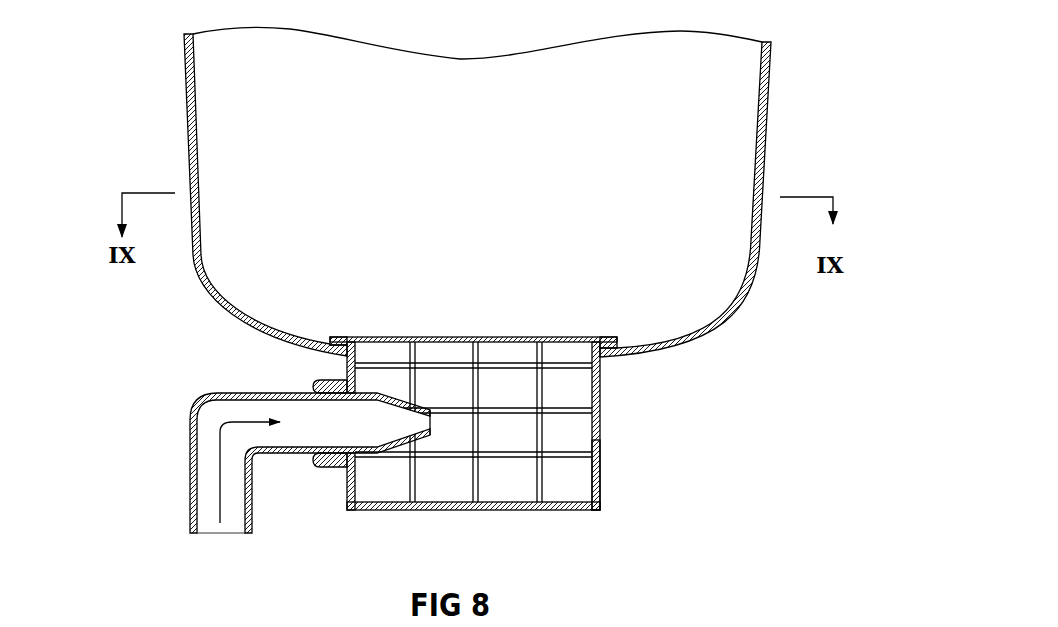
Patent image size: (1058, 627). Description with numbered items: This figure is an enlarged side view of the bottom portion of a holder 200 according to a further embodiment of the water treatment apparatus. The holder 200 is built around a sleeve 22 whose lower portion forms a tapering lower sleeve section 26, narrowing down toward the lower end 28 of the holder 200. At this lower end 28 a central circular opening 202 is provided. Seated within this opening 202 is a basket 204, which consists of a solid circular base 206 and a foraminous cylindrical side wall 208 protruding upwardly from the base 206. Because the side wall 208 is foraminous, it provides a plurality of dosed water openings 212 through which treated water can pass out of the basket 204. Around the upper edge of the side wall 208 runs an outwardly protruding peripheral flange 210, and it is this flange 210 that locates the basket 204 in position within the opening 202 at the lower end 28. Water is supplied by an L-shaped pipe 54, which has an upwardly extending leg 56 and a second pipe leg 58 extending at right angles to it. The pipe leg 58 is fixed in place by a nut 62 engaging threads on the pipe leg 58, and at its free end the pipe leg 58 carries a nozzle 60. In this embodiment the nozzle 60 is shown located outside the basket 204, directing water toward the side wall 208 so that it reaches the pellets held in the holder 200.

The sleeve 22 is at (490, 196).
The tapering lower sleeve section 26 is at (190, 122).
The lower end 28 is at (700, 338).
The holder 200 is at (802, 62).
The central circular opening 202 is at (532, 409).
The basket 204 is at (610, 432).
The solid circular base 206 is at (523, 510).
The foraminous cylindrical side wall 208 is at (597, 472).
The peripheral flange 210 is at (598, 338).
The dosed water openings 212 is at (495, 487).
The L-shaped pipe 54 is at (246, 415).
The upwardly extending leg 56 is at (190, 493).
The pipe leg 58 is at (252, 392).
The nozzle 60 is at (393, 412).
The nut 62 is at (333, 466).